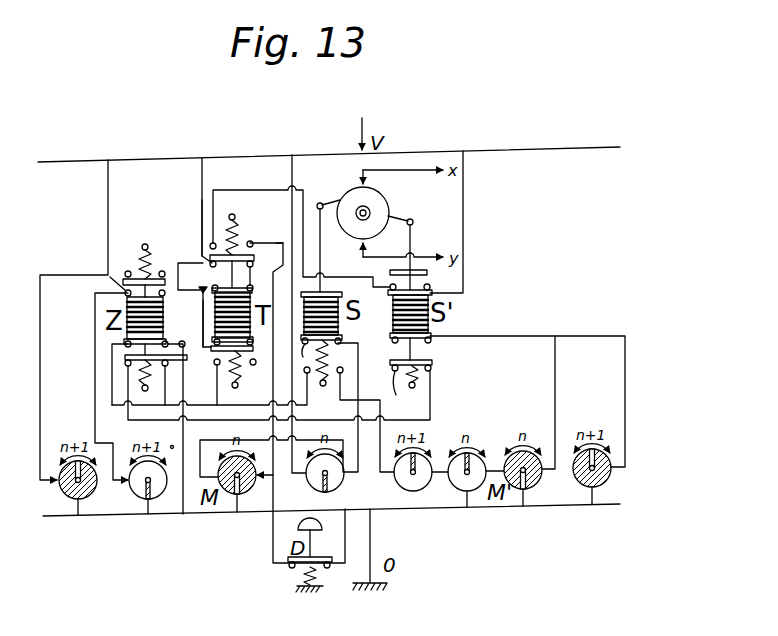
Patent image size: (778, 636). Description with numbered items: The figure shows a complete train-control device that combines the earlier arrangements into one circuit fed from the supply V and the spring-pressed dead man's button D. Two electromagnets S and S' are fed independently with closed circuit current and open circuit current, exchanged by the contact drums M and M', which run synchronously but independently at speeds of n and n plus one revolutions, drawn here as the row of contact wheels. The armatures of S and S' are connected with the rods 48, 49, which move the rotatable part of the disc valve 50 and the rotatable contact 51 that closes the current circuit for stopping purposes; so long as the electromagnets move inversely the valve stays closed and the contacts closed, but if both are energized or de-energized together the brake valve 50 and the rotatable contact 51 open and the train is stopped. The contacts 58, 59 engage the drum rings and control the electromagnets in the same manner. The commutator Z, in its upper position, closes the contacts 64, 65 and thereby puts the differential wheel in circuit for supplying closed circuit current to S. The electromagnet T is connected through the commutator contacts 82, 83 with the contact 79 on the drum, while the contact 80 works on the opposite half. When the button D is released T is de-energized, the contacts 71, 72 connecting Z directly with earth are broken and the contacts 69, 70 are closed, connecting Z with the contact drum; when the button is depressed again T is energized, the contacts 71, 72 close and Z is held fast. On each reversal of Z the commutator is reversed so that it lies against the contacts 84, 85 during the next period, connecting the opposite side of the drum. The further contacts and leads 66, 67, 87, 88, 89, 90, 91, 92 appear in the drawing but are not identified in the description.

The rod 48 is at (322, 252).
The rod 49 is at (412, 232).
The disc valve 50 is at (391, 212).
The rotatable contact 51 is at (386, 203).
The contact 58 is at (307, 354).
The contact 59 is at (340, 341).
The contact 64 is at (129, 271).
The contact 65 is at (163, 271).
The contact blade of relay Z 66 is at (109, 278).
The return spring of relay Z 67 is at (147, 246).
The contact 69 is at (217, 366).
The contact 70 is at (254, 366).
The contact 71 is at (203, 320).
The contact 72 is at (252, 343).
The contact 79 is at (127, 365).
The contact 80 is at (125, 343).
The contact of the commutator 82 is at (398, 375).
The contact of the commutator 83 is at (433, 366).
The contact 84 is at (308, 374).
The contact 85 is at (348, 357).
The fixed contact of relay T 87 is at (238, 214).
The fixed contact of relay T 88 is at (251, 241).
The contact lead of relay T 89 is at (201, 250).
The connecting lead 90 is at (279, 243).
The contact of relay T 91 is at (192, 278).
The contact of relay T 92 is at (252, 268).